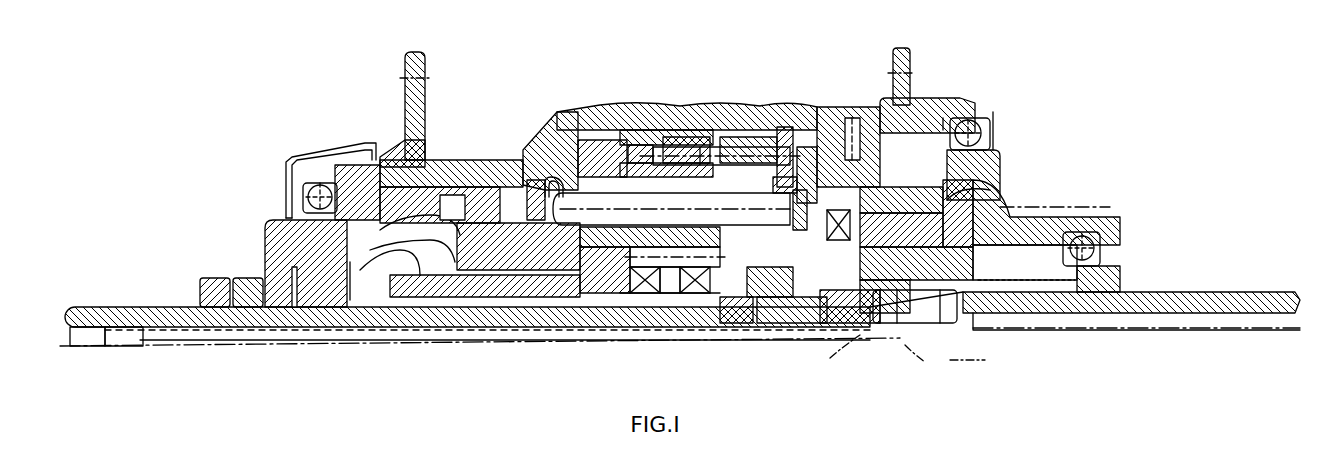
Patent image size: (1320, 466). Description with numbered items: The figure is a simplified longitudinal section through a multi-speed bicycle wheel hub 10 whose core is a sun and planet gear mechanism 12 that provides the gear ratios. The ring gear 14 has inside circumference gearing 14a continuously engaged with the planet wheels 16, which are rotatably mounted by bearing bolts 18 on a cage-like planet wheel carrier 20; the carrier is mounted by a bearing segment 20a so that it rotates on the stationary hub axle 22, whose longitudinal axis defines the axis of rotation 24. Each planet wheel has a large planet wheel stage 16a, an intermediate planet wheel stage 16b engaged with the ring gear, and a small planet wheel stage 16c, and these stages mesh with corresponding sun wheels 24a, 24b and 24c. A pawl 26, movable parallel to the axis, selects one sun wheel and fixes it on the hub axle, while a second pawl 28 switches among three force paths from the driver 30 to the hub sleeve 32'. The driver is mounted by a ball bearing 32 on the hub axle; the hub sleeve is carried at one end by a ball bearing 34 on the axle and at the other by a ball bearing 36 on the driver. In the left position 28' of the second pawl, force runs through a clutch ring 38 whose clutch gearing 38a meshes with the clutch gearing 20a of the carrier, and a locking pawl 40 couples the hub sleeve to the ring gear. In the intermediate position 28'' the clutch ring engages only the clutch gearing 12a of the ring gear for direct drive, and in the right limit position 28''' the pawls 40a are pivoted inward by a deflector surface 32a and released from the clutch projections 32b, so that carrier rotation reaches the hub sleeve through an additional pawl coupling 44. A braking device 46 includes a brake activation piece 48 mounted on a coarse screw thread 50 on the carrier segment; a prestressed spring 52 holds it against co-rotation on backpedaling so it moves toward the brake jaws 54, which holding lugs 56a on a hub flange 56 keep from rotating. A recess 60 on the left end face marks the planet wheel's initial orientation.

The multi-speed bicycle wheel hub 10 is at (1012, 118).
The sun and planet gear mechanism 12 is at (770, 134).
The clutch gearing of the ring gear 12a is at (962, 192).
The ring gear 14 is at (685, 145).
The inside circumference gearing 14a is at (722, 148).
The planet wheels 16 is at (574, 150).
The large planet wheel stage 16a is at (606, 138).
The intermediate planet wheel stage 16b is at (646, 137).
The small planet wheel stage 16c is at (752, 170).
The bearing bolts 18 is at (542, 185).
The planet wheel carrier 20 is at (800, 193).
The bearing segment 20a is at (460, 213).
The hub axle 22 is at (167, 308).
The axis of rotation 24 is at (1197, 330).
The sun wheel 24a is at (622, 305).
The sun wheel 24b is at (670, 285).
The sun wheel 24c is at (710, 278).
The pawl 26 is at (742, 323).
The second pawl 28 is at (875, 298).
The left end position of second pawl 28' is at (836, 361).
The intermediate position of second pawl 28'' is at (915, 366).
The right limit position of second pawl 28''' is at (979, 373).
The driver 30 is at (1100, 217).
The ball bearing 32 is at (1118, 244).
The hub sleeve 32' is at (982, 66).
The deflector surface 32a is at (921, 105).
The clutch projections 32b is at (830, 140).
The ball bearing 34 is at (305, 190).
The ball bearing 36 is at (972, 126).
The clutch ring 38 is at (892, 283).
The clutch gearing 38a is at (978, 328).
The locking pawl 40 is at (945, 120).
The pawls 40a is at (880, 112).
The pawl coupling 44 is at (505, 187).
The braking device 46 is at (348, 200).
The brake activation piece 48 is at (366, 320).
The coarse screw thread 50 is at (447, 257).
The prestressed spring 52 is at (332, 318).
The brake jaws 54 is at (380, 187).
The hub flange 56 is at (276, 236).
The holding lugs 56a is at (360, 230).
The recess 60 is at (560, 185).